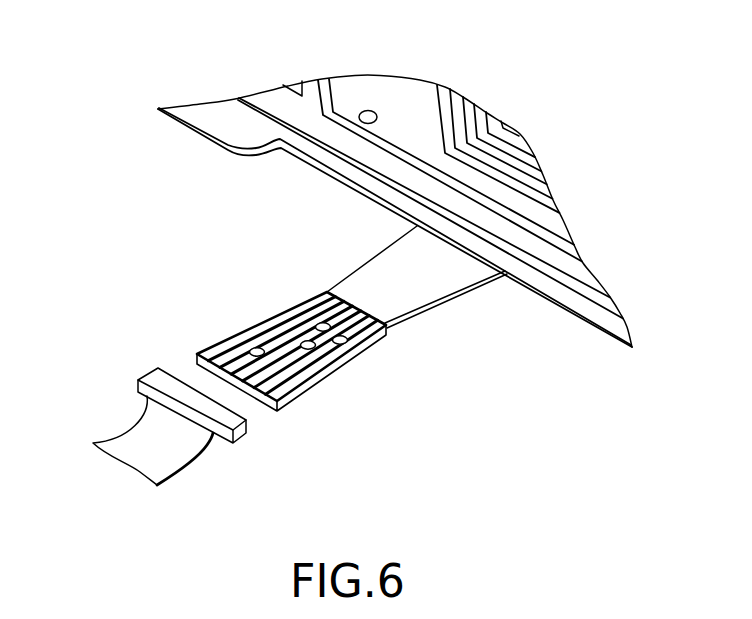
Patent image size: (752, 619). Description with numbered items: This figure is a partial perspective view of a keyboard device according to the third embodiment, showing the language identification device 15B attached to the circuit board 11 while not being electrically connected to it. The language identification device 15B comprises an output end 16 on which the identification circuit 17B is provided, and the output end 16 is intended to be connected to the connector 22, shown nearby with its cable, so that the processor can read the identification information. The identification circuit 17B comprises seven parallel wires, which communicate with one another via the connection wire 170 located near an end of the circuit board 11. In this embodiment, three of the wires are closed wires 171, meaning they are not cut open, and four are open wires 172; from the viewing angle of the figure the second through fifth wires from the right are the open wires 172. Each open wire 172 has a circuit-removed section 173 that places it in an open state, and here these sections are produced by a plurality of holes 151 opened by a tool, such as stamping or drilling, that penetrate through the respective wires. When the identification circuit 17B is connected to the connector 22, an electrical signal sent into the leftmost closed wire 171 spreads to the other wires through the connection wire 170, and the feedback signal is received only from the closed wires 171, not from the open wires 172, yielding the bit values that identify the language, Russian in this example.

The circuit board 11 is at (376, 95).
The language identification device 15B is at (312, 266).
The output end 16 is at (306, 346).
The identification circuit 17B is at (218, 345).
The connector 22 is at (157, 369).
The hole 151 is at (254, 348).
The connection wire 170 is at (362, 316).
The closed wire 171 is at (310, 318).
The open wire 172 is at (272, 397).
The circuit-removed section 173 is at (350, 346).